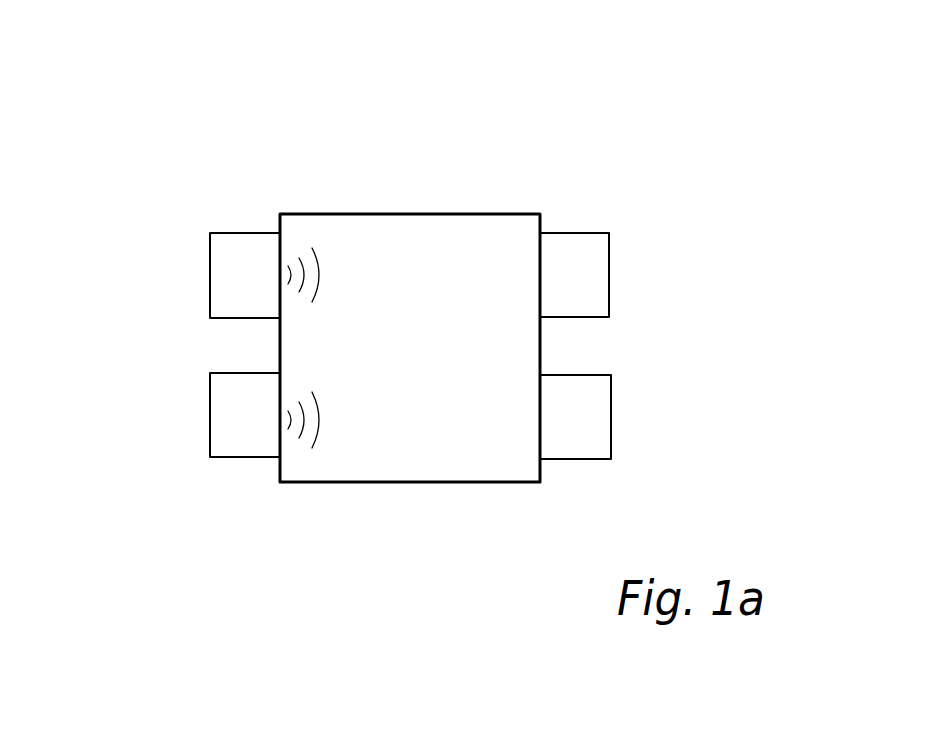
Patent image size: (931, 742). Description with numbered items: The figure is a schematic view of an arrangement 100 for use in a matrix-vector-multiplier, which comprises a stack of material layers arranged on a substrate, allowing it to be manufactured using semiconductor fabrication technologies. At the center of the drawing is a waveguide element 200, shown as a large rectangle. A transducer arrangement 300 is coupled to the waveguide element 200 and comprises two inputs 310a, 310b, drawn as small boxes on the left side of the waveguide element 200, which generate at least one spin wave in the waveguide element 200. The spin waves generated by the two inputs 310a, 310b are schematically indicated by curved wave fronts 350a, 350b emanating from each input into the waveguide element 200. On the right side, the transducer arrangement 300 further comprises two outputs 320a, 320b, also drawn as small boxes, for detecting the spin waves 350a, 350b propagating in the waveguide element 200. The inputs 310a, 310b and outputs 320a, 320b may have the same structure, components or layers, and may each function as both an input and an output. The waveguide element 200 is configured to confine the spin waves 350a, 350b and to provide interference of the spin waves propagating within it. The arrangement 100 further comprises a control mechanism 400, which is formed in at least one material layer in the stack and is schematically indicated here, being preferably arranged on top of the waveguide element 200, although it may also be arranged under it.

The arrangement 100 is at (660, 137).
The waveguide element 200 is at (515, 366).
The transducer arrangement 300 is at (160, 468).
The input 310a is at (210, 255).
The input 310b is at (210, 423).
The output 320a is at (610, 272).
The output 320b is at (611, 413).
The spin wave 350a is at (322, 268).
The spin wave 350b is at (300, 435).
The control mechanism 400 is at (467, 432).